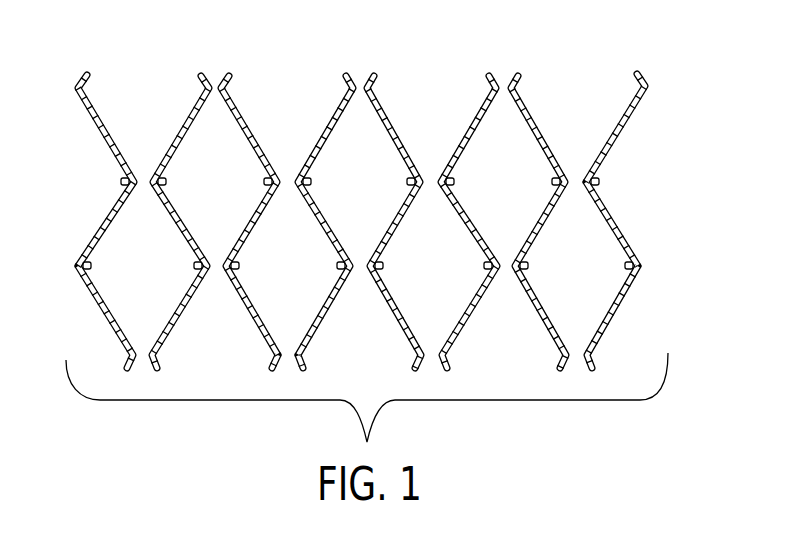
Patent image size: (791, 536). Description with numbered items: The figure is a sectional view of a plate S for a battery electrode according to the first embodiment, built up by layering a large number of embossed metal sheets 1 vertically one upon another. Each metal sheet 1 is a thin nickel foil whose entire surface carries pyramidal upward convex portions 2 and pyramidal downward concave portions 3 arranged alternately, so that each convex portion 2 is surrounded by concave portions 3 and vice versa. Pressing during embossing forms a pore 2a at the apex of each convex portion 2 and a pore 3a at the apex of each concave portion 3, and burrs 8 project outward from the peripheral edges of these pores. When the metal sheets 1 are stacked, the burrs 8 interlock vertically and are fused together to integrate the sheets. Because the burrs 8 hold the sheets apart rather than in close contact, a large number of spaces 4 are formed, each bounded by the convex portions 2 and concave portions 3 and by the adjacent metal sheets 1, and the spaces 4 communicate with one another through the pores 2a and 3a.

The plate for a battery electrode S is at (562, 78).
The metal sheet 1 is at (622, 124).
The convex portion 2 is at (217, 96).
The pore 2a is at (217, 74).
The concave portion 3 is at (143, 162).
The pore 3a is at (143, 192).
The space 4 is at (120, 303).
The burr 8 is at (206, 73).